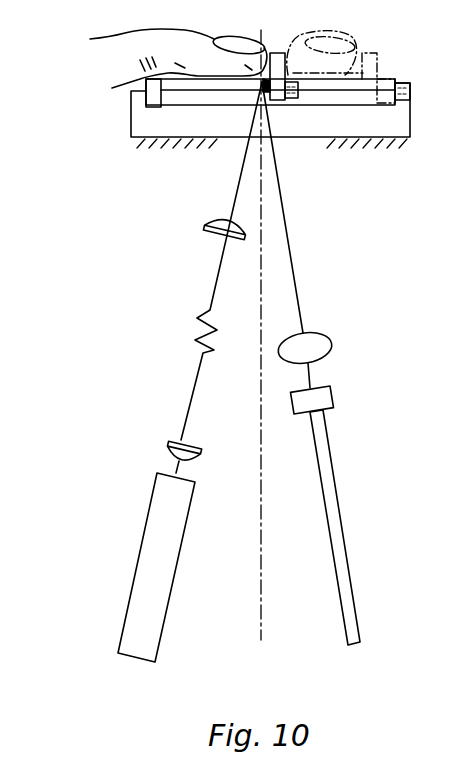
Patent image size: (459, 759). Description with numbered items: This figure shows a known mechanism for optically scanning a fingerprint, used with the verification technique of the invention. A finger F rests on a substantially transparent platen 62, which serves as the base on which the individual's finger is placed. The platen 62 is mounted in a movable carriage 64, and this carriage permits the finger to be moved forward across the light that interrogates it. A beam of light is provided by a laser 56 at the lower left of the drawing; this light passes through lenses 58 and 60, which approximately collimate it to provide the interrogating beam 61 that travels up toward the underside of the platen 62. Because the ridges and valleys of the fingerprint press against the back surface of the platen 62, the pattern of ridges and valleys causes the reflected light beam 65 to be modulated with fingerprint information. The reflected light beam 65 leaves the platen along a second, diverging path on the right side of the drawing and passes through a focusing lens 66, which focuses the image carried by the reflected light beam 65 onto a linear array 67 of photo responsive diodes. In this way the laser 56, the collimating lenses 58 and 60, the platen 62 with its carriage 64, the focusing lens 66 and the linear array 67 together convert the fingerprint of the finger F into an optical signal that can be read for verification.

The finger F is at (123, 35).
The laser 56 is at (140, 547).
The lens 58 is at (167, 455).
The lens 60 is at (212, 233).
The interrogating beam 61 is at (233, 192).
The platen 62 is at (188, 85).
The movable carriage 64 is at (277, 98).
The reflected light beam 65 is at (297, 283).
The focusing lens 66 is at (332, 343).
The linear array of photo responsive diodes 67 is at (333, 397).